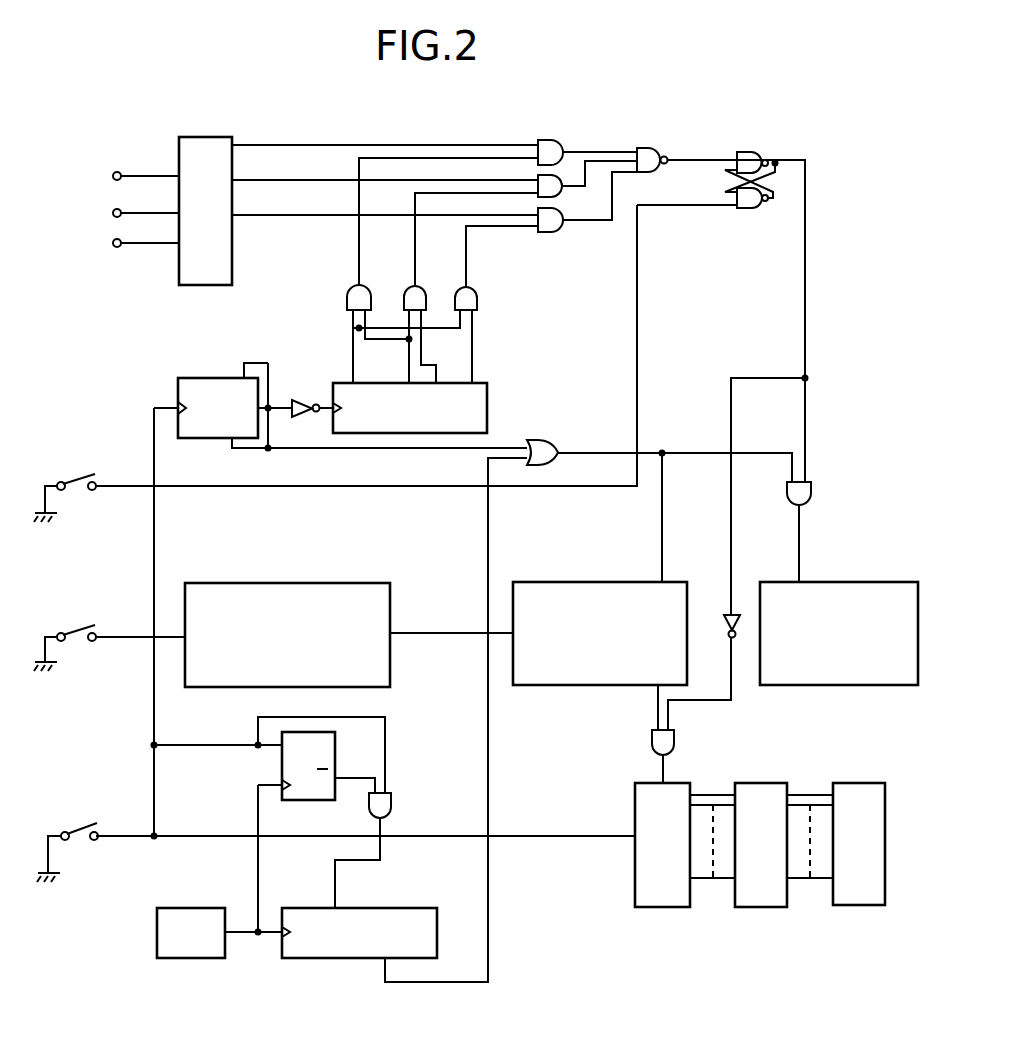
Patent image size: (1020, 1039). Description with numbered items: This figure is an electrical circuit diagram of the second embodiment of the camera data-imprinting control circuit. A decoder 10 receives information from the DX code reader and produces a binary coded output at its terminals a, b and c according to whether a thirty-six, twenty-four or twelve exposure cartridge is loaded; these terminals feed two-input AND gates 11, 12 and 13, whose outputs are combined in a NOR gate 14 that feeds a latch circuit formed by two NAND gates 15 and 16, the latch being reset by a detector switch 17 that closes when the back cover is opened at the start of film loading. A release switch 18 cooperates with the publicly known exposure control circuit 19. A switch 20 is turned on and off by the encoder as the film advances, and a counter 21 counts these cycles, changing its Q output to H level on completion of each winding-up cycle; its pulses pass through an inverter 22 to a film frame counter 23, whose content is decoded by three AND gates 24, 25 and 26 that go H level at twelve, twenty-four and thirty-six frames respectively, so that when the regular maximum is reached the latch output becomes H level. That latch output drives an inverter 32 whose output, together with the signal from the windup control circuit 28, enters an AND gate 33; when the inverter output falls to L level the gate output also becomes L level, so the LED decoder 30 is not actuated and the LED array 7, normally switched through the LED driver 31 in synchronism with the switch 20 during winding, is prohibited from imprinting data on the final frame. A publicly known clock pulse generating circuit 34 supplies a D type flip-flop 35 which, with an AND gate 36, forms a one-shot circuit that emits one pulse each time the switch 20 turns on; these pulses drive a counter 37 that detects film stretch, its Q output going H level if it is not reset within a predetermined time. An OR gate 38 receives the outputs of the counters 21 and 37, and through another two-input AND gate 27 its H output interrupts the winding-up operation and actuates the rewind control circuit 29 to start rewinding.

The LED array 7 is at (853, 783).
The decoder 10 is at (203, 137).
The AND gate 11 is at (560, 141).
The AND gate 12 is at (561, 197).
The AND gate 13 is at (560, 232).
The NOR gate 14 is at (655, 148).
The NAND gate 15 is at (748, 152).
The NAND gate 16 is at (750, 208).
The detector switch 17 is at (78, 493).
The release switch 18 is at (78, 644).
The exposure control circuit 19 is at (310, 583).
The switch 20 is at (82, 842).
The counter 21 is at (190, 378).
The inverter 22 is at (300, 399).
The film frame counter 23 is at (487, 400).
The AND gate 24 is at (372, 287).
The AND gate 25 is at (427, 288).
The AND gate 26 is at (477, 292).
The AND gate 27 is at (811, 493).
The windup control circuit 28 is at (590, 582).
The rewind control circuit 29 is at (855, 582).
The LED decoder 30 is at (676, 783).
The LED driver 31 is at (765, 783).
The inverter 32 is at (722, 618).
The AND gate 33 is at (652, 738).
The clock pulse generating circuit 34 is at (188, 908).
The D type flip-flop 35 is at (282, 758).
The AND gate 36 is at (391, 808).
The counter 37 is at (393, 908).
The OR gate 38 is at (545, 440).